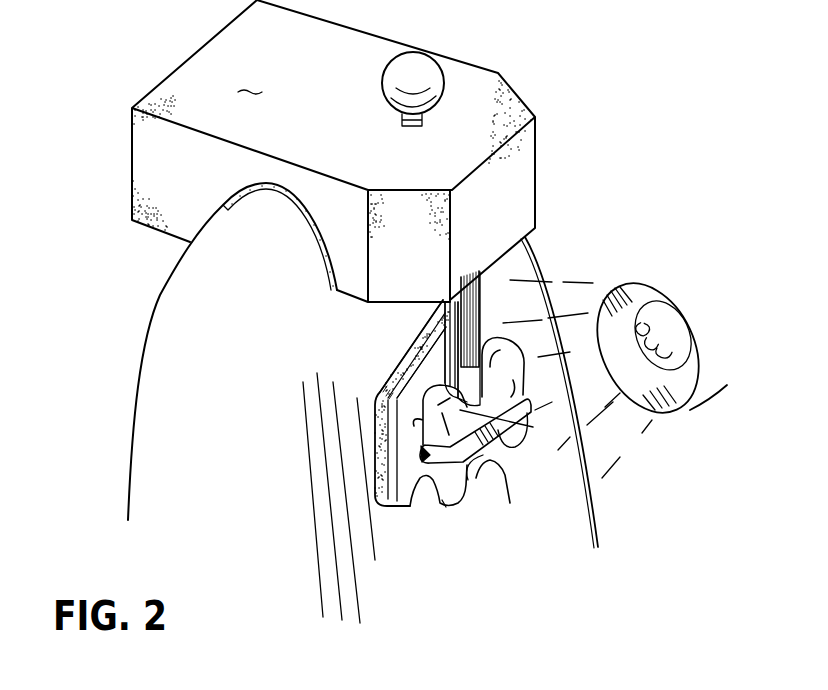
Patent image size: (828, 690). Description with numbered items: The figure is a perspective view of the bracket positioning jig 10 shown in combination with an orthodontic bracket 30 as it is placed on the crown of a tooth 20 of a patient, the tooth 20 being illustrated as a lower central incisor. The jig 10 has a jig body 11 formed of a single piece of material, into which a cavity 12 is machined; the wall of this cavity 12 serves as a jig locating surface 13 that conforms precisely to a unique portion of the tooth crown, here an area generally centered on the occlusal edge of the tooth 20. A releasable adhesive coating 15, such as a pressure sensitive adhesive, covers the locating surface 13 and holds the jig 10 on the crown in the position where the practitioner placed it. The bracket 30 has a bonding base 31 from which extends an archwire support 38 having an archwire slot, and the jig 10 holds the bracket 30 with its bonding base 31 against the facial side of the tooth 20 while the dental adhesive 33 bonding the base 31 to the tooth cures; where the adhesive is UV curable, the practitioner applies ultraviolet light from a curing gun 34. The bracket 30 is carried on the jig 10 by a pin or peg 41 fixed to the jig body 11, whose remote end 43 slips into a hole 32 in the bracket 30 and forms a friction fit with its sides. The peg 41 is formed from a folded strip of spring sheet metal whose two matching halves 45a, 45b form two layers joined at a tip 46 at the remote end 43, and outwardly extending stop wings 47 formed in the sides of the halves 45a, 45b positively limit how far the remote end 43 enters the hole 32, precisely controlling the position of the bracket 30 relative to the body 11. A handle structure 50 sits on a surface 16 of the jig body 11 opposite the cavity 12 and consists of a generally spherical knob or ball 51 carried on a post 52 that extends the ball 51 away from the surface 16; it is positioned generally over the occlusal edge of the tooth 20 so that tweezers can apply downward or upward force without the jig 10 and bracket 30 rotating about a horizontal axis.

The bracket positioning jig 10 is at (105, 243).
The jig body 11 is at (520, 92).
The cavity 12 is at (298, 213).
The jig locating surface 13 is at (281, 192).
The releasable adhesive coating 15 is at (320, 241).
The surface of the jig body 16 is at (255, 77).
The tooth 20 is at (134, 408).
The orthodontic bracket 30 is at (420, 450).
The bonding base 31 is at (397, 372).
The hole 32 is at (523, 418).
The dental adhesive 33 is at (372, 447).
The curing gun 34 is at (610, 287).
The archwire support 38 is at (445, 494).
The pin or peg 41 is at (487, 283).
The remote end of the peg 43 is at (492, 463).
The first strip half 45a is at (445, 305).
The second strip half 45b is at (478, 312).
The tip of the peg 46 is at (478, 478).
The stop wings 47 is at (480, 415).
The handle structure 50 is at (445, 68).
The knob or ball 51 is at (384, 70).
The post 52 is at (401, 119).